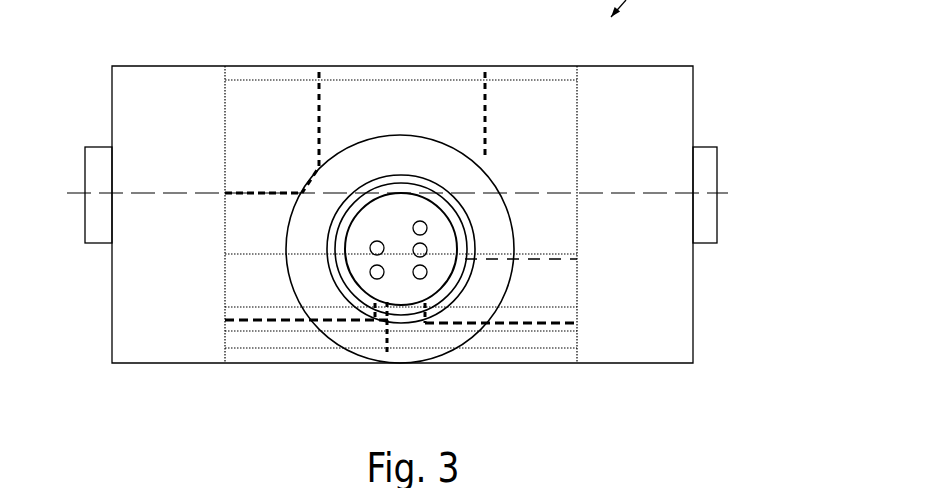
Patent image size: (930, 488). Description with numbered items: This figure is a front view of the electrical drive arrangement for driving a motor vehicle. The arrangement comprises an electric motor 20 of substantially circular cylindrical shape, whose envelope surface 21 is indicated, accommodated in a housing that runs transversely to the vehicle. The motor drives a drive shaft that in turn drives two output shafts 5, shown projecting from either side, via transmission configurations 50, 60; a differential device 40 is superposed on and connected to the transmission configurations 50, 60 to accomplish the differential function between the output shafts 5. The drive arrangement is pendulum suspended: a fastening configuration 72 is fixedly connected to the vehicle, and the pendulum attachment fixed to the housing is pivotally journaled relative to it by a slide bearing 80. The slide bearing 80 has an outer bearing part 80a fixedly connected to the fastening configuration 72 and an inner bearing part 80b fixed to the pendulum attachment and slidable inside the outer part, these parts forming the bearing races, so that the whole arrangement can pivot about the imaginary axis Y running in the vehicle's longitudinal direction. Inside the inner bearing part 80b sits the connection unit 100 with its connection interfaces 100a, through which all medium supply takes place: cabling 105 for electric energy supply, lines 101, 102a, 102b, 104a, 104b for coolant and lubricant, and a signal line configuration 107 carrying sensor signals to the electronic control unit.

The output shaft 5 is at (103, 244).
The electric motor 20 is at (407, 77).
The envelope surface 21 is at (302, 80).
The differential device 40 is at (325, 351).
The transmission configuration 50 is at (168, 363).
The transmission configuration 60 is at (635, 364).
The fastening configuration 72 is at (362, 335).
The slide bearing 80 is at (463, 288).
The outer bearing part 80a is at (413, 313).
The inner bearing part 80b is at (400, 250).
The connection unit 100 is at (397, 210).
The connection interface 100a is at (421, 221).
The line for coolant and lubricant 101 is at (385, 338).
The line for coolant and lubricant 102a is at (250, 322).
The line for coolant and lubricant 102b is at (317, 131).
The line for coolant and lubricant 104a is at (539, 325).
The line for coolant and lubricant 104b is at (486, 127).
The cabling for electric energy supply 105 is at (498, 259).
The signal line configuration 107 is at (225, 287).
The axis Y is at (498, 262).